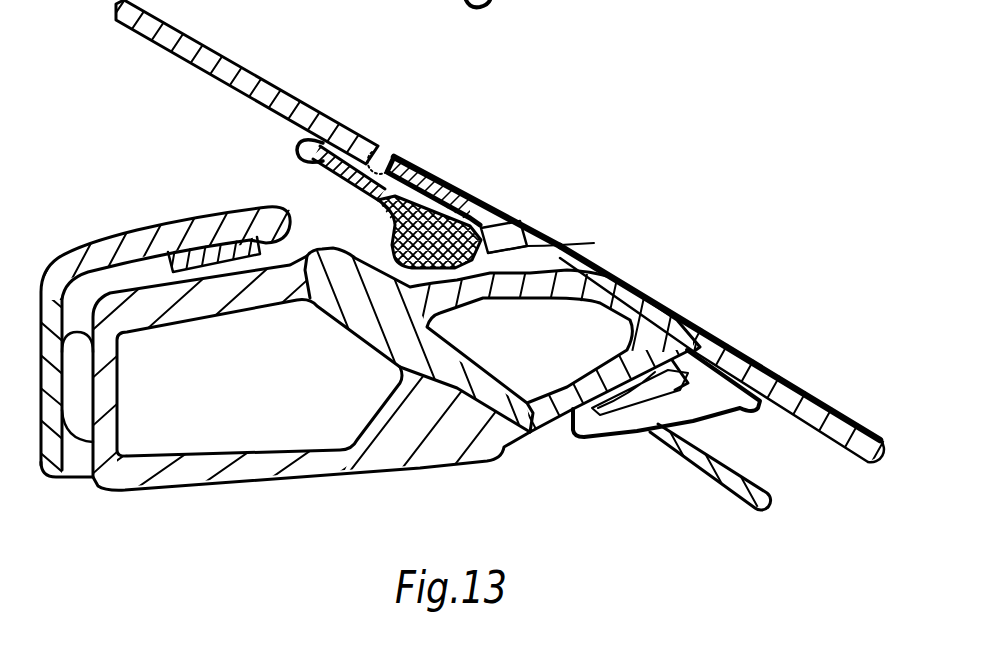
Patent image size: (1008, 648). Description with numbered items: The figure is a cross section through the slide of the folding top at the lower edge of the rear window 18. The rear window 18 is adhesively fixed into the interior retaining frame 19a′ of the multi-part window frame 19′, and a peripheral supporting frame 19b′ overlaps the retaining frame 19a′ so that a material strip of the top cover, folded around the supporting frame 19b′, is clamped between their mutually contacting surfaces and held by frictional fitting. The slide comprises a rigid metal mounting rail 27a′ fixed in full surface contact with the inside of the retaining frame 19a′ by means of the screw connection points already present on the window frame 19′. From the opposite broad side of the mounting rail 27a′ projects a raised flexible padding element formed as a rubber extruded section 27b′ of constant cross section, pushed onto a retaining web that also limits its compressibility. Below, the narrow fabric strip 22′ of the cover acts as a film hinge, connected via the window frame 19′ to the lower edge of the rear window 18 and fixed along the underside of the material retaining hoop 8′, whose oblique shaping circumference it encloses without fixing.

The rear window 18 is at (231, 60).
The window frame 19′ is at (401, 206).
The retaining frame 19a′ is at (330, 160).
The supporting frame 19b′ is at (518, 222).
The fabric strip 22′ is at (639, 329).
The mounting rail 27a′ is at (448, 188).
The extruded section 27b′ is at (563, 243).
The material retaining hoop 8′ is at (492, 443).